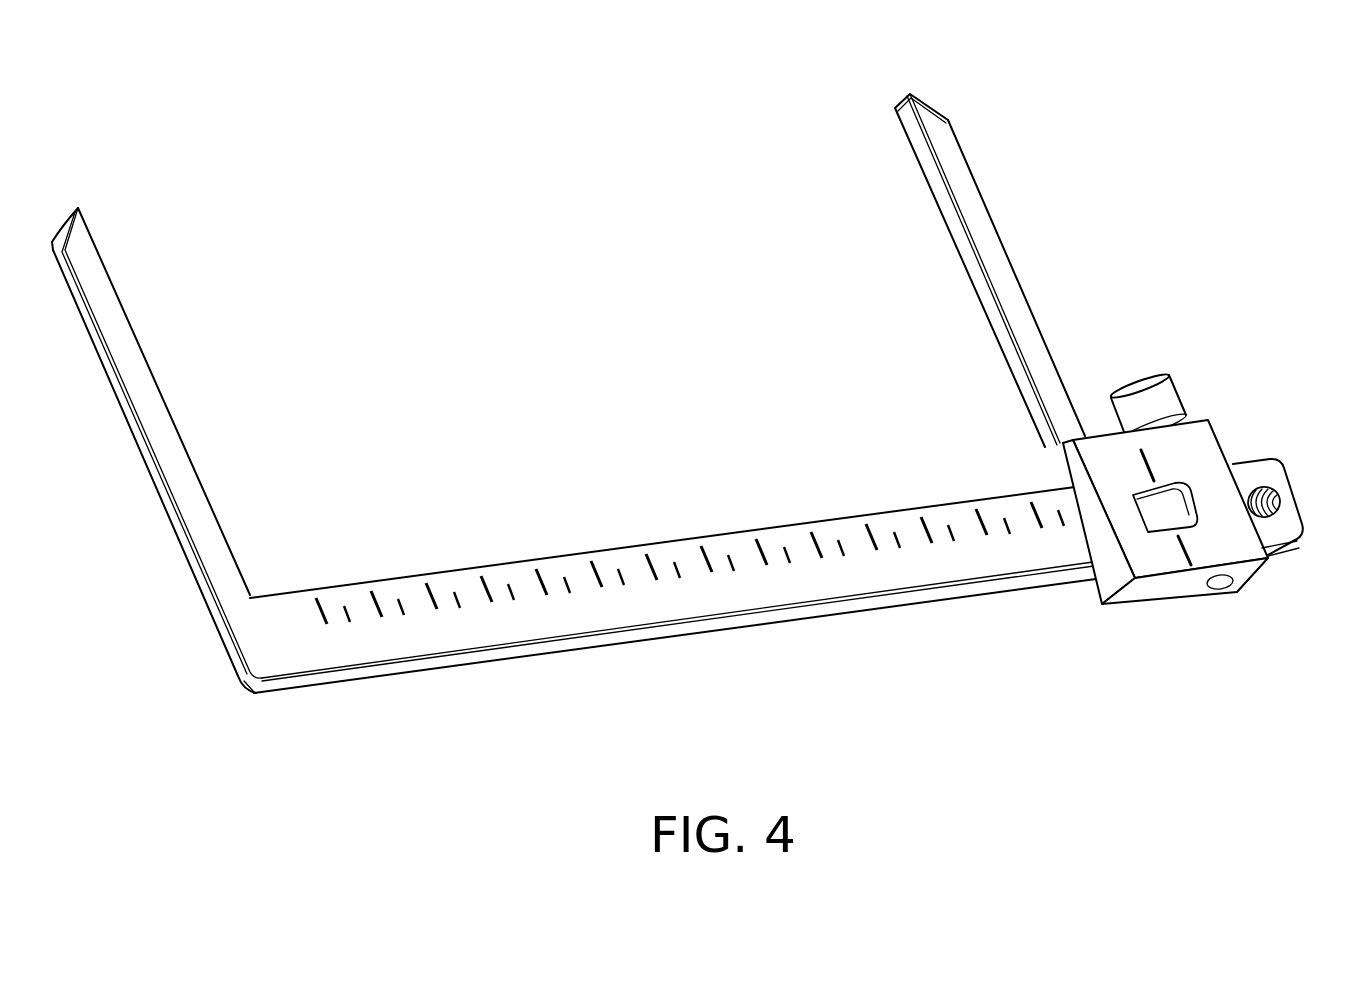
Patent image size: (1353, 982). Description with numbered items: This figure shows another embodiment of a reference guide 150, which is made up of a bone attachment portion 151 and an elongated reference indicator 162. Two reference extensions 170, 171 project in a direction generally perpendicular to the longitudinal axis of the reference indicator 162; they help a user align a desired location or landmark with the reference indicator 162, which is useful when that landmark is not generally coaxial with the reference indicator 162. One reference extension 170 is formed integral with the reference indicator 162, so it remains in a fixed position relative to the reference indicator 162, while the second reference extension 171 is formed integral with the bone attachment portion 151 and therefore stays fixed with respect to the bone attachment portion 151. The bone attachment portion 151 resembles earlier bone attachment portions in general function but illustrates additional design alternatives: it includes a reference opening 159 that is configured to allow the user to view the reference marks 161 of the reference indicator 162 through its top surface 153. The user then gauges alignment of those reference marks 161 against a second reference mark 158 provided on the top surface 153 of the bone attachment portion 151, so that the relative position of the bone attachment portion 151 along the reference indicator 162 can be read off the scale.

The reference guide 150 is at (496, 156).
The bone attachment portion 151 is at (1228, 394).
The top surface 153 is at (1212, 450).
The second reference mark 158 is at (1143, 450).
The reference opening 159 is at (1137, 492).
The reference marks 161 is at (318, 598).
The reference indicator 162 is at (262, 669).
The reference extension 170 is at (96, 242).
The reference extension 171 is at (961, 149).